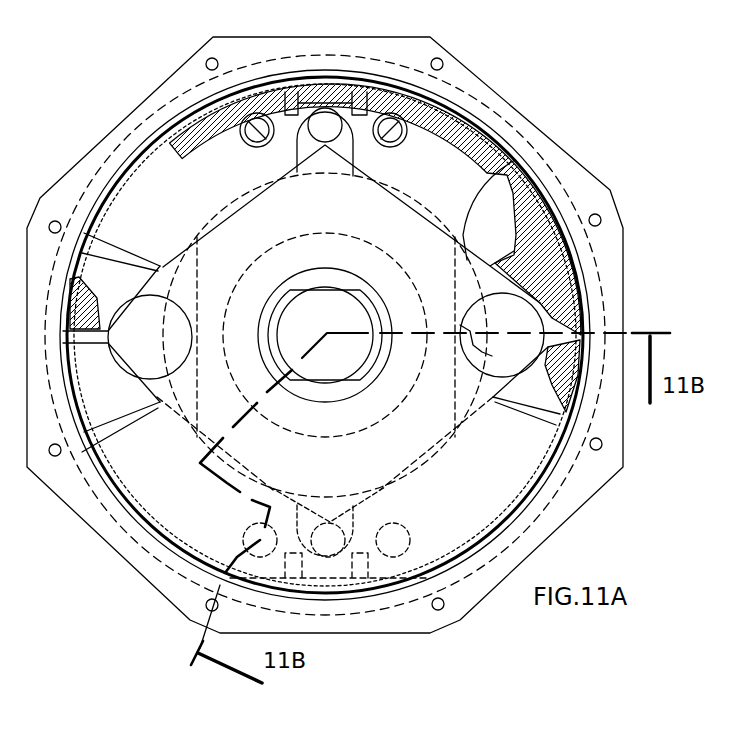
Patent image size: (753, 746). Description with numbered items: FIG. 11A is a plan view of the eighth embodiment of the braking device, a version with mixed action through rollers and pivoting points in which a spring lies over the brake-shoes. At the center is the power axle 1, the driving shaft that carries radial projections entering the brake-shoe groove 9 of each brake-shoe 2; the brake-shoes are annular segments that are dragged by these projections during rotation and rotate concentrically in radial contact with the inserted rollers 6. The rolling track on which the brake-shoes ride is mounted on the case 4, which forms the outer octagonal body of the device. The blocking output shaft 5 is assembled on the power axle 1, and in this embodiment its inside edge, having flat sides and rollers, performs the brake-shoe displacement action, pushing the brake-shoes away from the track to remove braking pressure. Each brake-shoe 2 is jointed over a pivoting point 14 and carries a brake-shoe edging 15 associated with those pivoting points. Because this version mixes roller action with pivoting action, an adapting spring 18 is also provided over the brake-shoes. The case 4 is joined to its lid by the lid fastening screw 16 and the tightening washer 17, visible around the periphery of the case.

The power axle 1 is at (298, 303).
The brake-shoe 2 is at (545, 162).
The case 4 is at (133, 120).
The blocking output shaft 5 is at (402, 215).
The rollers 6 is at (583, 286).
The brake-shoe groove 9 is at (481, 217).
The pivoting point 14 is at (258, 115).
The brake-shoe edging 15 is at (600, 392).
The lid fastening screw 16 is at (210, 58).
The tightening washer 17 is at (207, 68).
The adapting spring 18 is at (598, 332).